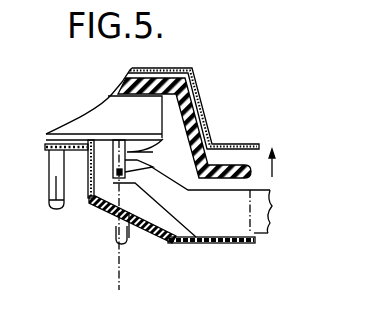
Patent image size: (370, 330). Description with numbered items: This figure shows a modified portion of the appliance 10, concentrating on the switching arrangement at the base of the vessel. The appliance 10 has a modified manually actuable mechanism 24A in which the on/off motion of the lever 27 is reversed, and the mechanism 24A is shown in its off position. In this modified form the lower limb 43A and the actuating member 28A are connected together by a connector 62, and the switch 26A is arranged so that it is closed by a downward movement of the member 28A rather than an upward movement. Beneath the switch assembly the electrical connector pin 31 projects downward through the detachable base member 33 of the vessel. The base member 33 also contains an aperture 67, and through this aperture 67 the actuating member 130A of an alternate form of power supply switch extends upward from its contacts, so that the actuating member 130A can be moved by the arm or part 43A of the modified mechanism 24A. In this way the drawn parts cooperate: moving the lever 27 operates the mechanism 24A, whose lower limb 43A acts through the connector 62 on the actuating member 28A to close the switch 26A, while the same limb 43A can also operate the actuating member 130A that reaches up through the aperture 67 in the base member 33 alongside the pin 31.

The appliance 10 is at (215, 98).
The switch 26A is at (91, 130).
The actuating member 28A is at (146, 146).
The connector 62 is at (153, 167).
The pin 31 is at (70, 204).
The base member 33 is at (97, 199).
The actuating member 130A is at (137, 233).
The aperture 67 is at (129, 233).
The lower limb 43A is at (172, 204).
The manually actuable mechanism 24A is at (222, 210).
The control lever 27 is at (269, 211).